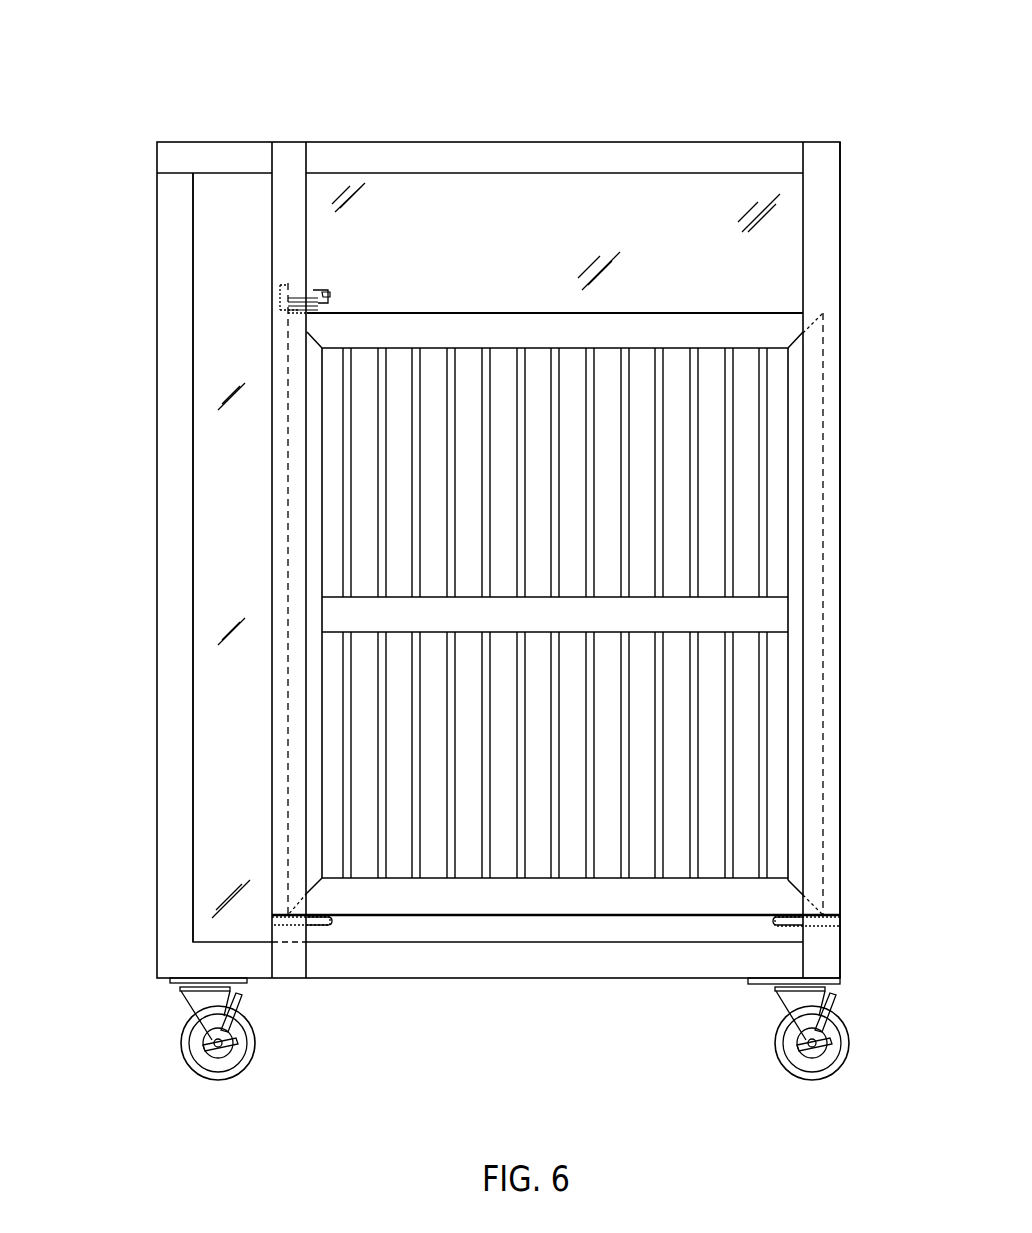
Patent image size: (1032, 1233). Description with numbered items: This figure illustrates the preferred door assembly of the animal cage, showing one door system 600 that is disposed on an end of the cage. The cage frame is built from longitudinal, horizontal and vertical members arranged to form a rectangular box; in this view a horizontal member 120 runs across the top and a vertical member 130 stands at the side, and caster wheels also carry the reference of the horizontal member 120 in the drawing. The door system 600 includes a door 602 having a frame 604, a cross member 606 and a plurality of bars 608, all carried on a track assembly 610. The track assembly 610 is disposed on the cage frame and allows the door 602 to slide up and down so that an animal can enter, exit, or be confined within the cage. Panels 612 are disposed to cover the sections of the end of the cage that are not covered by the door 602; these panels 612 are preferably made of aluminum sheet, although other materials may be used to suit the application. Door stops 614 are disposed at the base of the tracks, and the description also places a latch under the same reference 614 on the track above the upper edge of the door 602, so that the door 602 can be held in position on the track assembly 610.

The door system 600 is at (458, 112).
The vertical member 130 is at (165, 917).
The track assembly 610 is at (288, 160).
The horizontal member 120 is at (607, 153).
The panel 612 is at (607, 230).
The door 602 is at (390, 332).
The frame 604 is at (551, 587).
The cross member 606 is at (772, 613).
The bars 608 is at (767, 455).
The door stop 614 is at (317, 922).